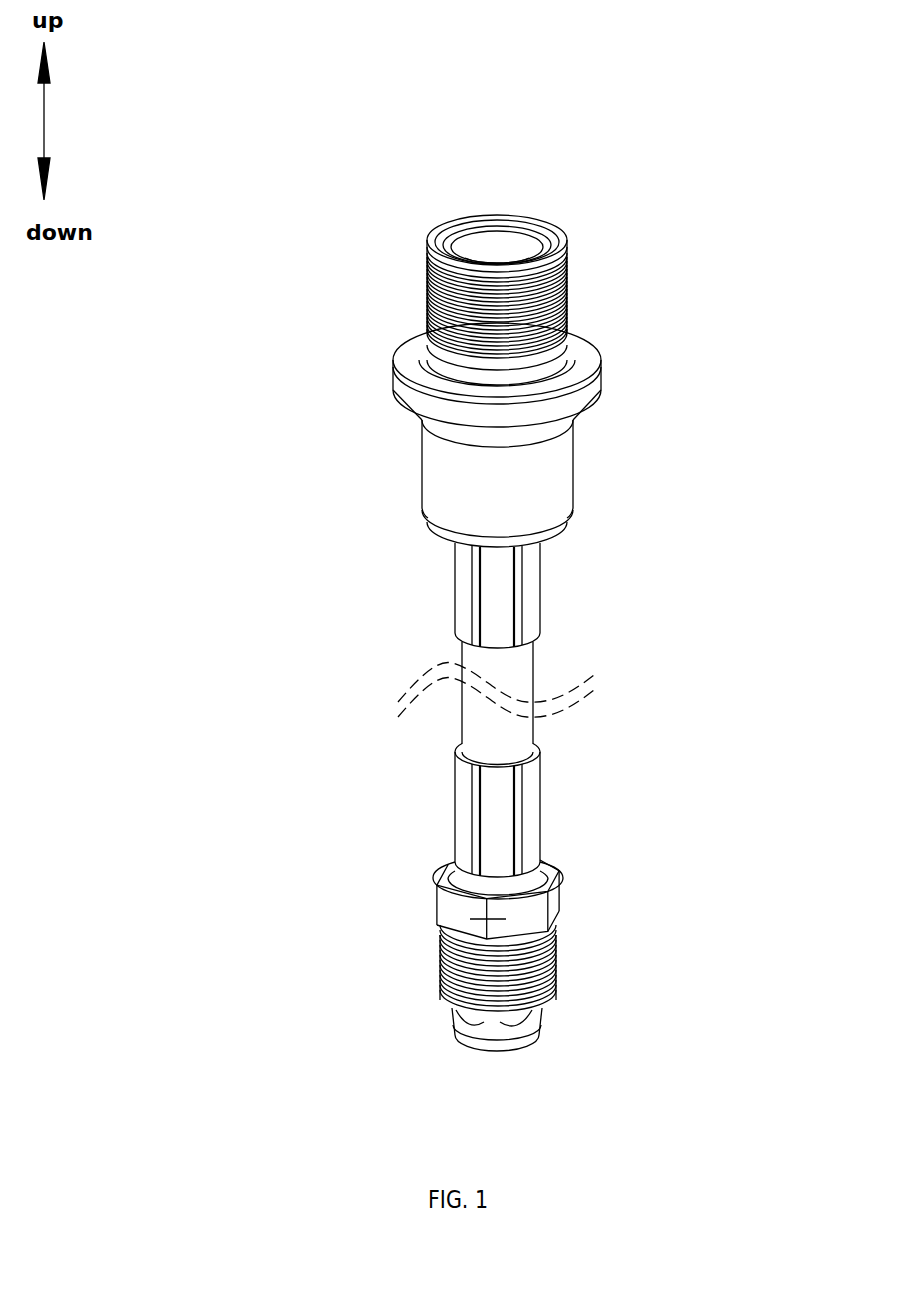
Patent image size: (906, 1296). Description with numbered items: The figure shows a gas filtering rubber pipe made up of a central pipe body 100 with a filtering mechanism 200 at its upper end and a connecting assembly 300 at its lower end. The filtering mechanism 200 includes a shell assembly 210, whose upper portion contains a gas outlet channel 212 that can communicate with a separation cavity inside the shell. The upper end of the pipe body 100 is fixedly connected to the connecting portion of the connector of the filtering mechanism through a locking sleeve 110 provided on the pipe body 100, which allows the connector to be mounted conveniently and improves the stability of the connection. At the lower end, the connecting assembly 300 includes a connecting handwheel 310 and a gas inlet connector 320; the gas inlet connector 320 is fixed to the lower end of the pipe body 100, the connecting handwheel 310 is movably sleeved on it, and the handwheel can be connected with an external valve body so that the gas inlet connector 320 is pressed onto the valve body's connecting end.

The pipe body 100 is at (500, 710).
The locking sleeve 110 is at (498, 575).
The filtering mechanism 200 is at (518, 316).
The shell assembly 210 is at (415, 367).
The gas outlet channel 212 is at (492, 248).
The connecting assembly 300 is at (555, 996).
The connecting handwheel 310 is at (523, 930).
The gas inlet connector 320 is at (490, 1023).